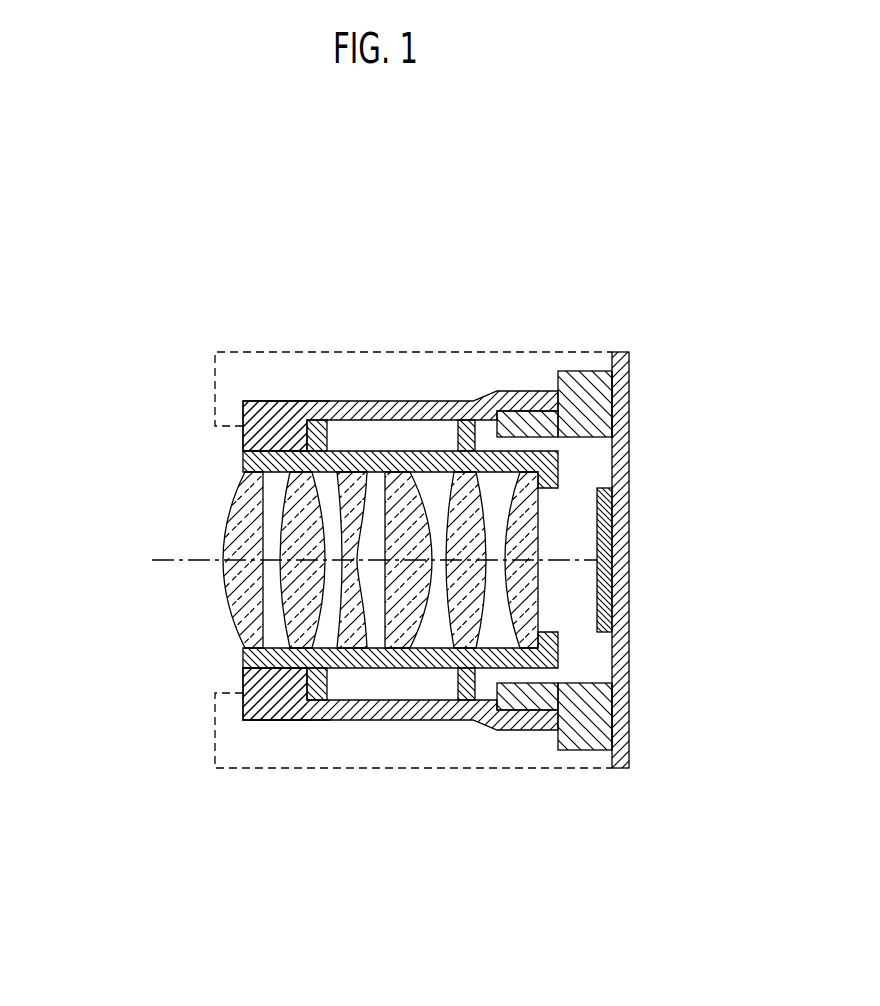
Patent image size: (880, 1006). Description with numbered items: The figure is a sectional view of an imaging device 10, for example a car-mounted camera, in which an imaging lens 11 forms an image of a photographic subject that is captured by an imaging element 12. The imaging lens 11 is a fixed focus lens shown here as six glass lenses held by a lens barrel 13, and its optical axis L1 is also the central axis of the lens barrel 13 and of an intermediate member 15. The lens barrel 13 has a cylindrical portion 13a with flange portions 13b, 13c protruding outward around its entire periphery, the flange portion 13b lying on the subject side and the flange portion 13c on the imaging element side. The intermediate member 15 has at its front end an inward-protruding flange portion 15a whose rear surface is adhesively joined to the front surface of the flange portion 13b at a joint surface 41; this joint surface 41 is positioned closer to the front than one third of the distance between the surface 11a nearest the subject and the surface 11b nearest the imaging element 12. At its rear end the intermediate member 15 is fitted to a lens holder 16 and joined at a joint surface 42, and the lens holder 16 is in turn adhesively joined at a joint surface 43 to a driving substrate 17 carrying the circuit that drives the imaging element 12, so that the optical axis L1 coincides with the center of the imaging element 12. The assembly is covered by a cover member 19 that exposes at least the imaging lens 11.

The imaging device 10 is at (131, 320).
The imaging lens 11 is at (368, 560).
The surface on the side nearest the photographic subject 11a is at (223, 585).
The surface on the side nearest the imaging element 11b is at (540, 530).
The imaging element 12 is at (602, 490).
The lens barrel 13 is at (356, 561).
The cylindrical portion 13a is at (382, 456).
The flange portion 13b is at (315, 432).
The flange portion 13c is at (465, 432).
The intermediate member 15 is at (342, 402).
The flange portion 15a is at (265, 430).
The lens holder 16 is at (598, 376).
The driving substrate 17 is at (622, 522).
The cover member 19 is at (222, 367).
The joint surface 41 is at (281, 415).
The joint surface 42 is at (549, 405).
The joint surface 43 is at (628, 397).
The optical axis L1 is at (167, 565).